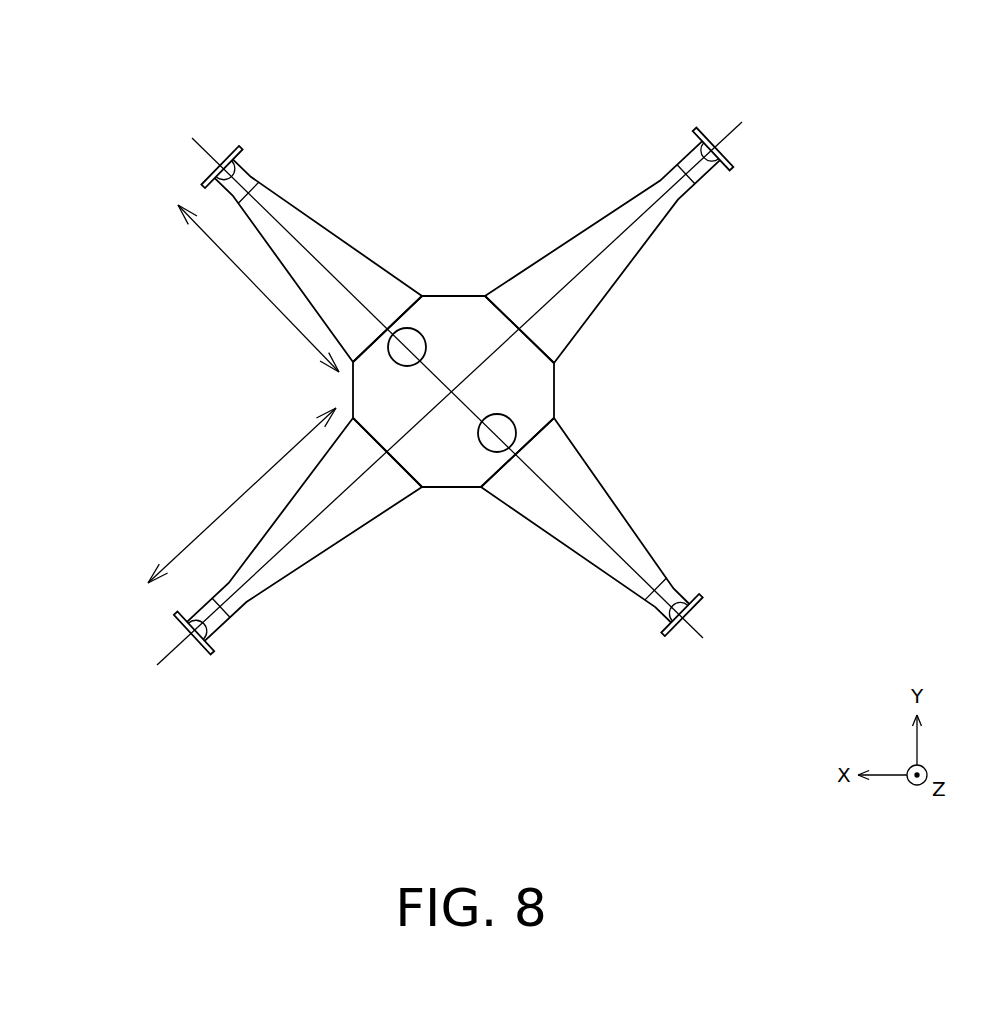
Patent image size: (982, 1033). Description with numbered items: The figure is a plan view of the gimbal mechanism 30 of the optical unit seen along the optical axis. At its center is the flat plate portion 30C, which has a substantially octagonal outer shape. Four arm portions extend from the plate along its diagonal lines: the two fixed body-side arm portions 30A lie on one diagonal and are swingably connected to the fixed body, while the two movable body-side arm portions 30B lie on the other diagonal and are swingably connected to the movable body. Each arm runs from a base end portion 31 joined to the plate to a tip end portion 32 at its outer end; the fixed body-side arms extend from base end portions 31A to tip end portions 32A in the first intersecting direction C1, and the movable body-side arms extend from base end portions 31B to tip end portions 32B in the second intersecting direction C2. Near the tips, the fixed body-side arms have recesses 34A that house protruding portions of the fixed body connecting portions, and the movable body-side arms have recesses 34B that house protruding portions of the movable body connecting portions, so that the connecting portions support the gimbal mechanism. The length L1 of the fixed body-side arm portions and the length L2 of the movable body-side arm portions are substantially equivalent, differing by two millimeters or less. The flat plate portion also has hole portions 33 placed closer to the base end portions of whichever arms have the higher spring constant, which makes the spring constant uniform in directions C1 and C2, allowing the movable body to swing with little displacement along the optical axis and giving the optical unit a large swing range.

The gimbal mechanism 30 is at (867, 102).
The fixed body-side arm portion 30A is at (628, 247).
The movable body-side arm portion 30B is at (321, 238).
The flat plate portion 30C is at (522, 377).
The base end portion 31 is at (467, 378).
The base end portion 31A is at (483, 314).
The base end portion 31B is at (417, 308).
The tip end portion 32 is at (512, 389).
The tip end portion 32A is at (693, 130).
The tip end portion 32B is at (236, 150).
The hole portion 33 is at (413, 330).
The recess 34A is at (708, 168).
The recess 34B is at (258, 176).
The first intersecting direction C1 is at (466, 382).
The second intersecting direction C2 is at (432, 376).
The length L1 is at (242, 495).
The length L2 is at (258, 288).